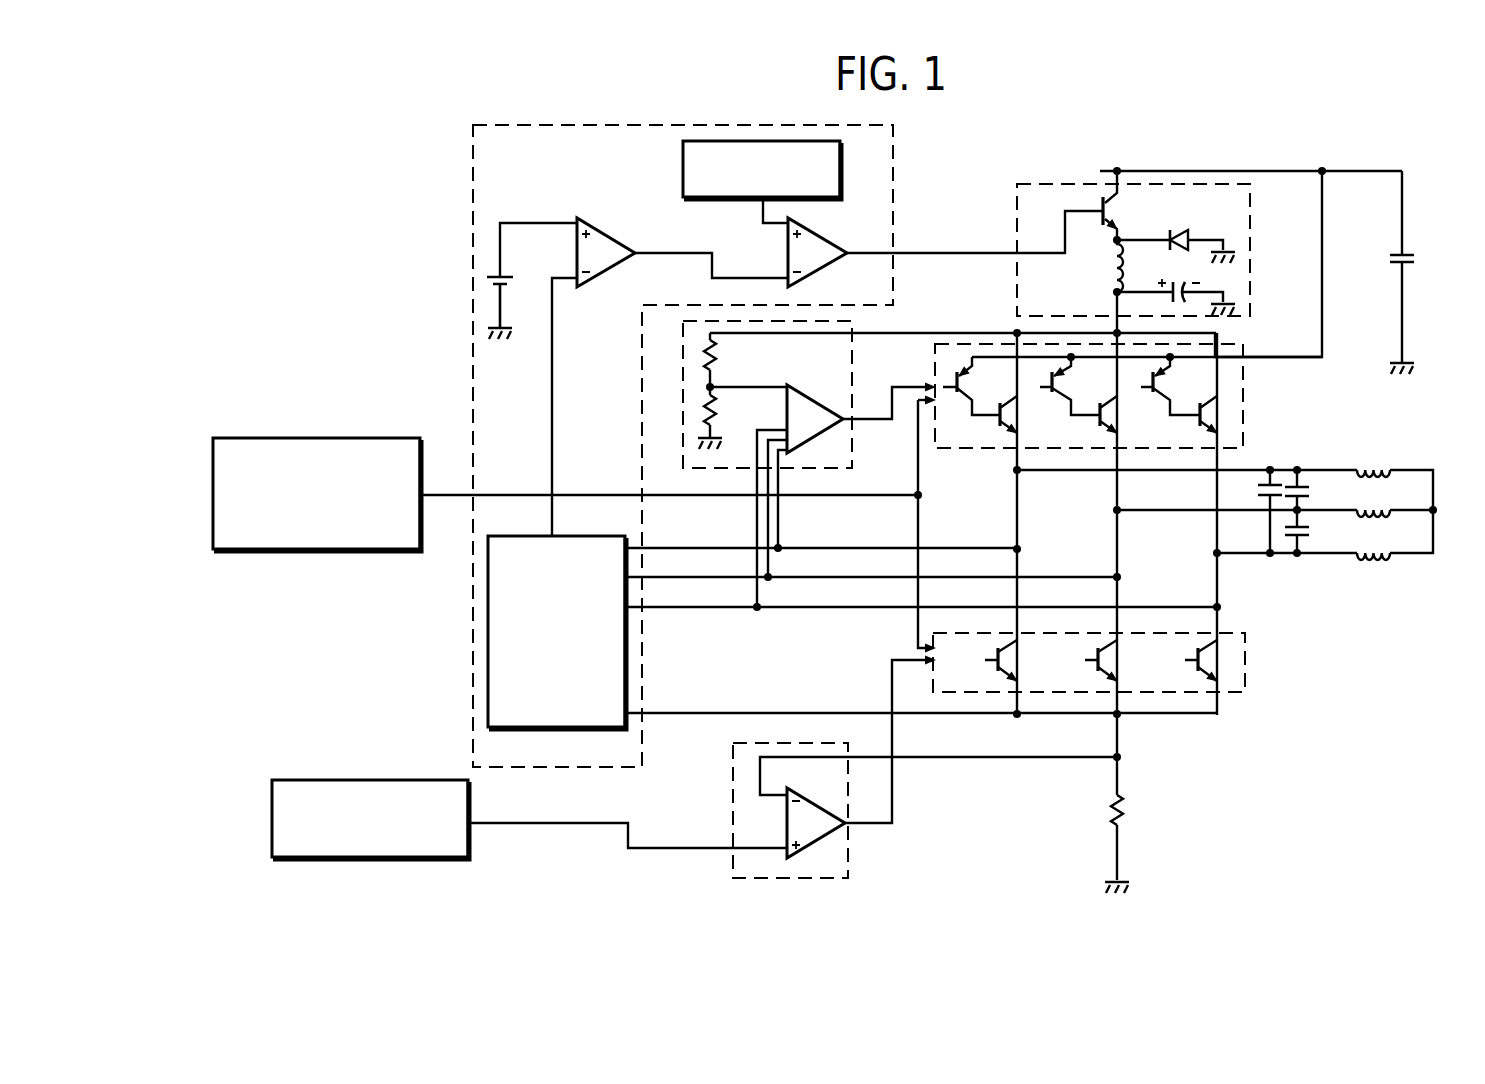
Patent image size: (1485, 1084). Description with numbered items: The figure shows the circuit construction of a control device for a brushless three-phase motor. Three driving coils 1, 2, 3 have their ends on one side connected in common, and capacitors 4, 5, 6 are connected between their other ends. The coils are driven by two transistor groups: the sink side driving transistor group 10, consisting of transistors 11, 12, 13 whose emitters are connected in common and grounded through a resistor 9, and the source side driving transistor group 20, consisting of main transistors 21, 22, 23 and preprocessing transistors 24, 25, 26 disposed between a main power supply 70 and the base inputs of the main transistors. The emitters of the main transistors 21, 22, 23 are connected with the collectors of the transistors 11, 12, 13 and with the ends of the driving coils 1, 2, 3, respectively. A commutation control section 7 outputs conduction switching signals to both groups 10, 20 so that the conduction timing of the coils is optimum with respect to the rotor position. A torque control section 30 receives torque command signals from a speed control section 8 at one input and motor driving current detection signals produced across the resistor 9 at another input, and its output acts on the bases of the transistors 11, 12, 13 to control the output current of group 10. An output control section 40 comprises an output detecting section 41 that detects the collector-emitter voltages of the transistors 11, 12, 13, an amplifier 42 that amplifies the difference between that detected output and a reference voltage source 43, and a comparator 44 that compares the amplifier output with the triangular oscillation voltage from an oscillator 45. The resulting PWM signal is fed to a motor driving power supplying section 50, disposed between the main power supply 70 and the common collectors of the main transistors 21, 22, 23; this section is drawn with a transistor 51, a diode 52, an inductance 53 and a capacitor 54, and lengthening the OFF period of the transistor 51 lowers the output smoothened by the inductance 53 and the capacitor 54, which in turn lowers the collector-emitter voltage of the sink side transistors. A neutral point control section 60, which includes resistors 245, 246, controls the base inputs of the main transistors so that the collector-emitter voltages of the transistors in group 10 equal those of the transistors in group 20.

The driving coil 1 is at (1377, 463).
The driving coil 2 is at (1383, 505).
The driving coil 3 is at (1383, 547).
The capacitor 4 is at (1306, 490).
The capacitor 5 is at (1306, 531).
The capacitor 6 is at (1260, 492).
The commutation control section 7 is at (383, 438).
The speed control section 8 is at (345, 780).
The resistor 9 is at (1110, 806).
The sink side driving transistor group 10 is at (1245, 667).
The driving transistor 11 is at (985, 662).
The driving transistor 12 is at (1085, 662).
The driving transistor 13 is at (1185, 662).
The source side driving transistor group 20 is at (1243, 418).
The main transistor 21 is at (995, 420).
The main transistor 22 is at (1095, 420).
The main transistor 23 is at (1195, 420).
The preprocessing transistor 24 is at (962, 386).
The preprocessing transistor 25 is at (1058, 386).
The preprocessing transistor 26 is at (1158, 386).
The torque control section 30 is at (848, 867).
The output control section 40 is at (472, 604).
The output detecting section 41 is at (488, 690).
The amplifier 42 is at (617, 240).
The reference voltage source 43 is at (510, 277).
The comparator 44 is at (824, 240).
The oscillator 45 is at (683, 173).
The motor driving power supplying section 50 is at (1017, 210).
The transistor 51 is at (1114, 222).
The diode 52 is at (1184, 232).
The inductance 53 is at (1112, 282).
The capacitor 54 is at (1180, 284).
The neutral point control section 60 is at (852, 430).
The main power supply 70 is at (1395, 262).
The resistor 245 is at (716, 355).
The resistor 246 is at (716, 405).